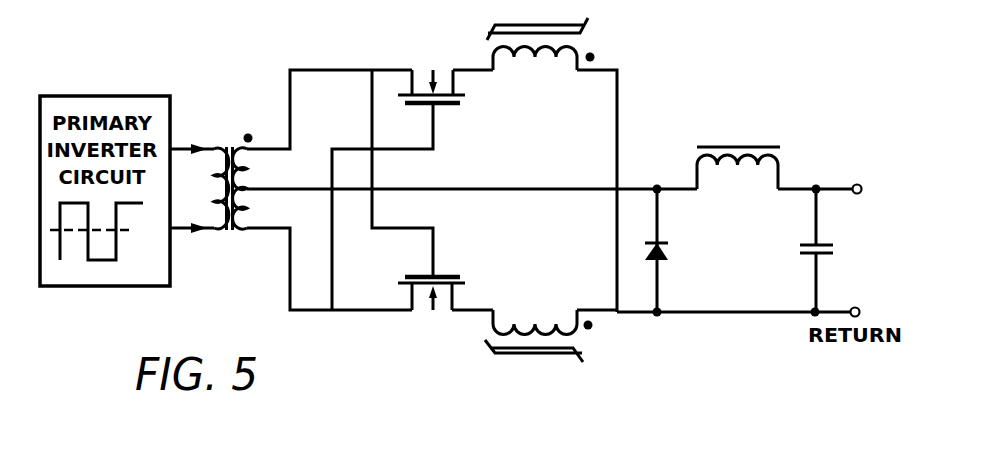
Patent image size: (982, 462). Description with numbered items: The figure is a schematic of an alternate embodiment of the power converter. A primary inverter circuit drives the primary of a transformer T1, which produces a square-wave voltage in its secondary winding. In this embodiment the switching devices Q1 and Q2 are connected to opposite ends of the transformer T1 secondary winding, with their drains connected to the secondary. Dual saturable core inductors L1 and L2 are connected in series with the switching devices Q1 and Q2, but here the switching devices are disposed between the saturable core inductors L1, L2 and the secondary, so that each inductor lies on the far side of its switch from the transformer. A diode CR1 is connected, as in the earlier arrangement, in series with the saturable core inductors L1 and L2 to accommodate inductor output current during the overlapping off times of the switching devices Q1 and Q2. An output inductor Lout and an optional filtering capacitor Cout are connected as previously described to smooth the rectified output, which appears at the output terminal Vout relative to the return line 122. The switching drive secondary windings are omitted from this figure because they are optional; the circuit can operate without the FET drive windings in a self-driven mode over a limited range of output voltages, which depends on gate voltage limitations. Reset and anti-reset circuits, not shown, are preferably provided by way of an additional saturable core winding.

The return line 122 is at (730, 312).
The transformer T1 is at (233, 172).
The switching device Q1 is at (431, 72).
The switching device Q2 is at (431, 307).
The saturable core inductor L1 is at (541, 49).
The saturable core inductor L2 is at (539, 330).
The output inductor Lout is at (738, 154).
The diode CR1 is at (680, 250).
The output capacitor Cout is at (789, 250).
The output voltage terminal Vout is at (856, 174).